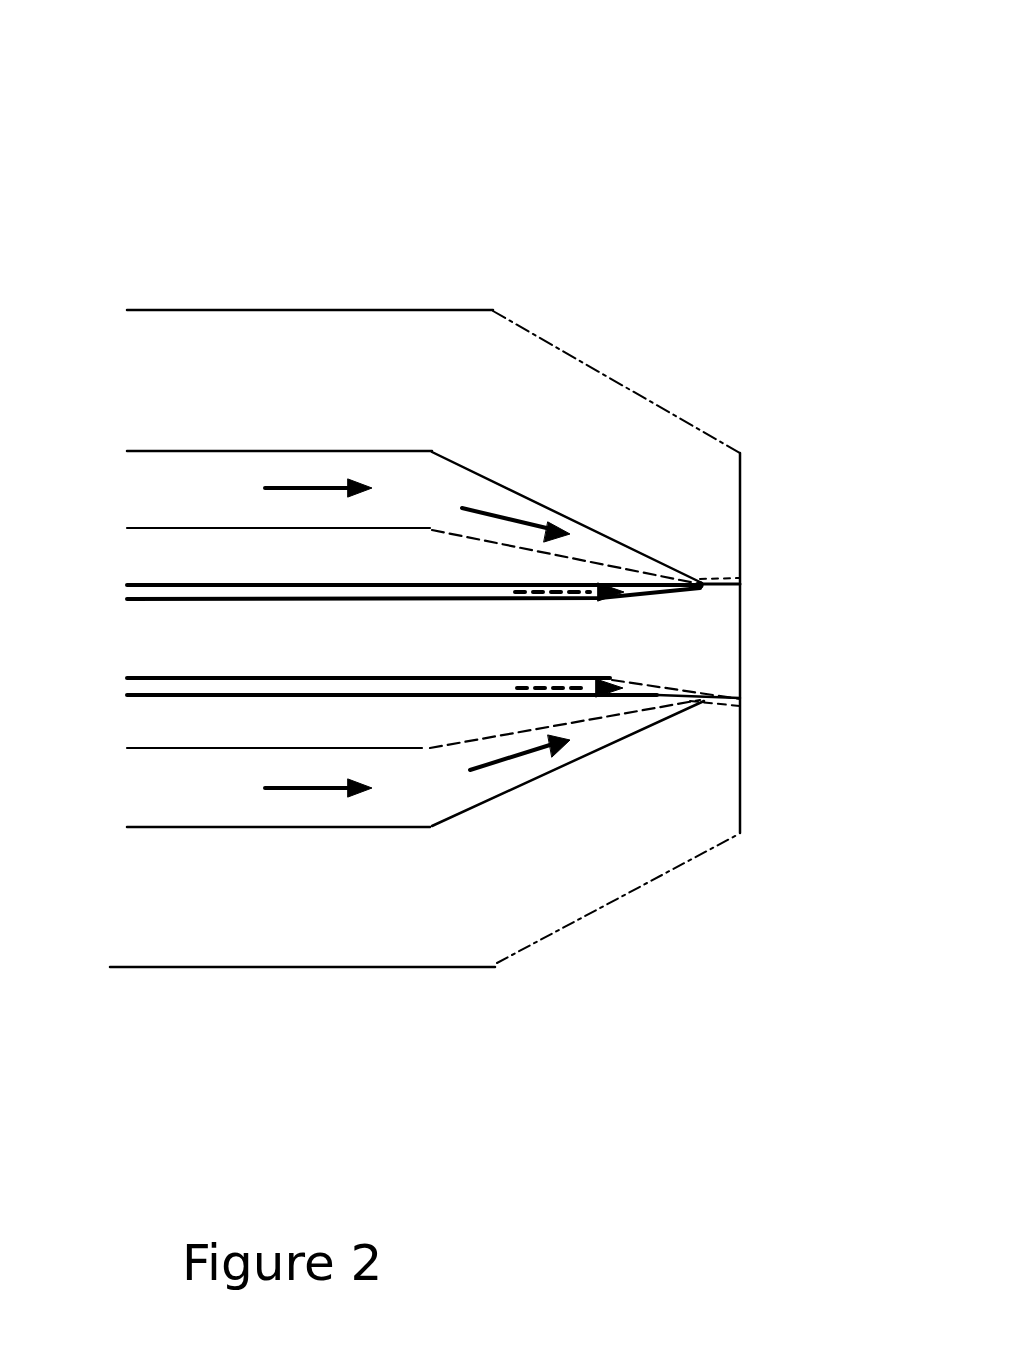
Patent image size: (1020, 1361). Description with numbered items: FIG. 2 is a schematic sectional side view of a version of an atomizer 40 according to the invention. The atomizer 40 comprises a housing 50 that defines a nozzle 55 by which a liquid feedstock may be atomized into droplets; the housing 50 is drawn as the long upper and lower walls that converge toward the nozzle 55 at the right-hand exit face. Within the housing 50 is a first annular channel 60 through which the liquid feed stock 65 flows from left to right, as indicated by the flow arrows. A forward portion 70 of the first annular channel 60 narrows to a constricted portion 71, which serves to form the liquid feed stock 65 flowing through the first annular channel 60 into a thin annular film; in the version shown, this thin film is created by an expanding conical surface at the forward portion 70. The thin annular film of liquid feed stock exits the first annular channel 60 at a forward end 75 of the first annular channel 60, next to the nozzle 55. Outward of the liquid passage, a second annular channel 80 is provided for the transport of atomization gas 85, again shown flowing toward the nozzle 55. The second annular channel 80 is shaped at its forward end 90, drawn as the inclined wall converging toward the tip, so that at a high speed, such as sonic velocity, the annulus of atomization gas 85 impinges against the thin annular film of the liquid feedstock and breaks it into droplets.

The atomizer 40 is at (524, 89).
The housing 50 is at (345, 323).
The nozzle 55 is at (825, 369).
The first annular channel 60 is at (457, 692).
The liquid feed stock 65 is at (548, 698).
The forward portion 70 is at (663, 715).
The constricted portion 71 is at (670, 596).
The forward end 75 is at (707, 732).
The second annular channel 80 is at (189, 476).
The atomization gas 85 is at (306, 482).
The forward end of second annular channel 90 is at (640, 550).